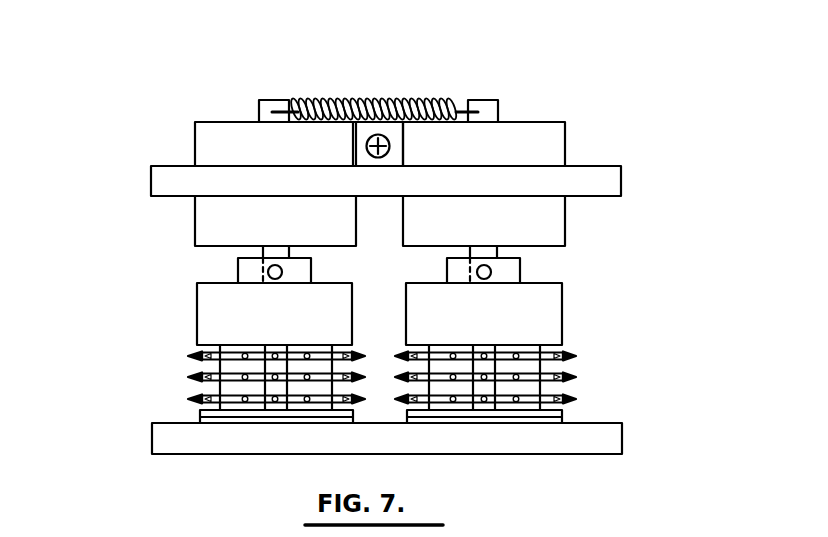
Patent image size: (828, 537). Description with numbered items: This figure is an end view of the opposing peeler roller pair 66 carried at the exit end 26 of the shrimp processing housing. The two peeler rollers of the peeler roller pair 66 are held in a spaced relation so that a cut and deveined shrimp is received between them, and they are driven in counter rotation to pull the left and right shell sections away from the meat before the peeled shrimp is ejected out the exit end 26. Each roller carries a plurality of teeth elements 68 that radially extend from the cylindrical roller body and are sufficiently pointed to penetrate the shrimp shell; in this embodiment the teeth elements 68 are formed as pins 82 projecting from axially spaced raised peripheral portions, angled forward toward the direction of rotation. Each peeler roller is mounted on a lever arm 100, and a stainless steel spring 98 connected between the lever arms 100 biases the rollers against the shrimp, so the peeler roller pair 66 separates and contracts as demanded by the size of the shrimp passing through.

The exit end 26 is at (144, 419).
The opposing peeler roller pair 66 is at (582, 307).
The teeth elements 68 is at (593, 386).
The pins 82 is at (237, 360).
The spring 98 is at (372, 100).
The lever arm 100 is at (422, 190).